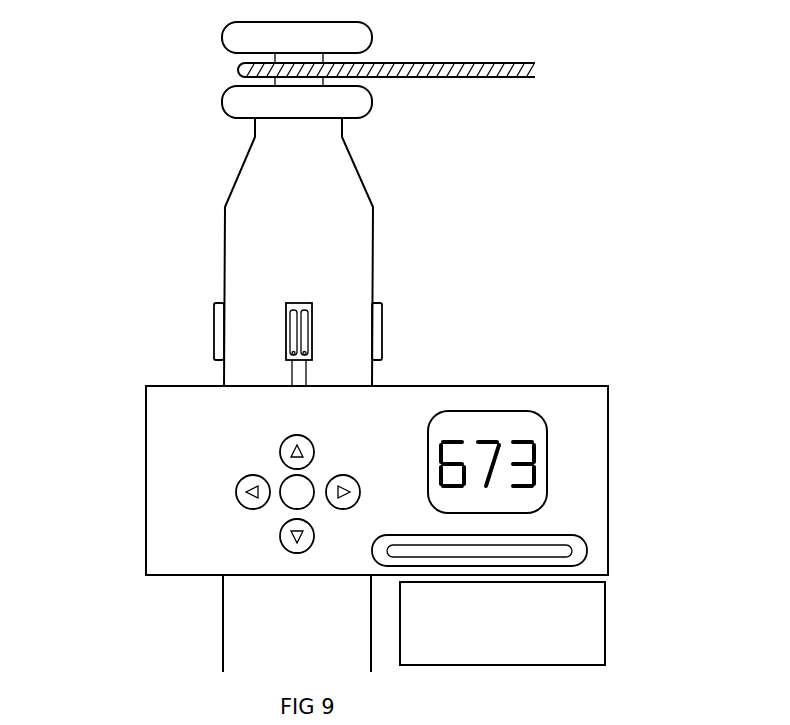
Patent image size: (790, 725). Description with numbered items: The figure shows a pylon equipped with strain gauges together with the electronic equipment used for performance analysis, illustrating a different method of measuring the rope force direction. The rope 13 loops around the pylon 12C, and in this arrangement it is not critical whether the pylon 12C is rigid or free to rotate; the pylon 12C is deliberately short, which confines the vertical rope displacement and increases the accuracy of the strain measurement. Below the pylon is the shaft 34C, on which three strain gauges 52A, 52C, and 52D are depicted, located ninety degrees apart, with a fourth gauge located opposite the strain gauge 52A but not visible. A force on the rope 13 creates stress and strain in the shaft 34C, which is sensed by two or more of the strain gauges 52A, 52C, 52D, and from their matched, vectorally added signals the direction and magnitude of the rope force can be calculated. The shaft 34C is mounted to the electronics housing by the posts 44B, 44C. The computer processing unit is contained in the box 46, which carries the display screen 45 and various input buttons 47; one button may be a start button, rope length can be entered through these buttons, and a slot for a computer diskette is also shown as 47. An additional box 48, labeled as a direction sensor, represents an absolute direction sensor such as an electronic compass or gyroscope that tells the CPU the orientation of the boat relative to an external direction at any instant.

The pylon 12C is at (226, 84).
The rope 13 is at (455, 63).
The shaft 34C is at (224, 290).
The strain gauge 52A is at (312, 330).
The strain gauge 52C is at (382, 339).
The strain gauge 52D is at (214, 342).
The mounting post 44B is at (307, 376).
The mounting post 44C is at (291, 382).
The display screen 45 is at (547, 443).
The box 46 is at (146, 465).
The input buttons 47 is at (237, 505).
The direction sensor 48 is at (605, 605).